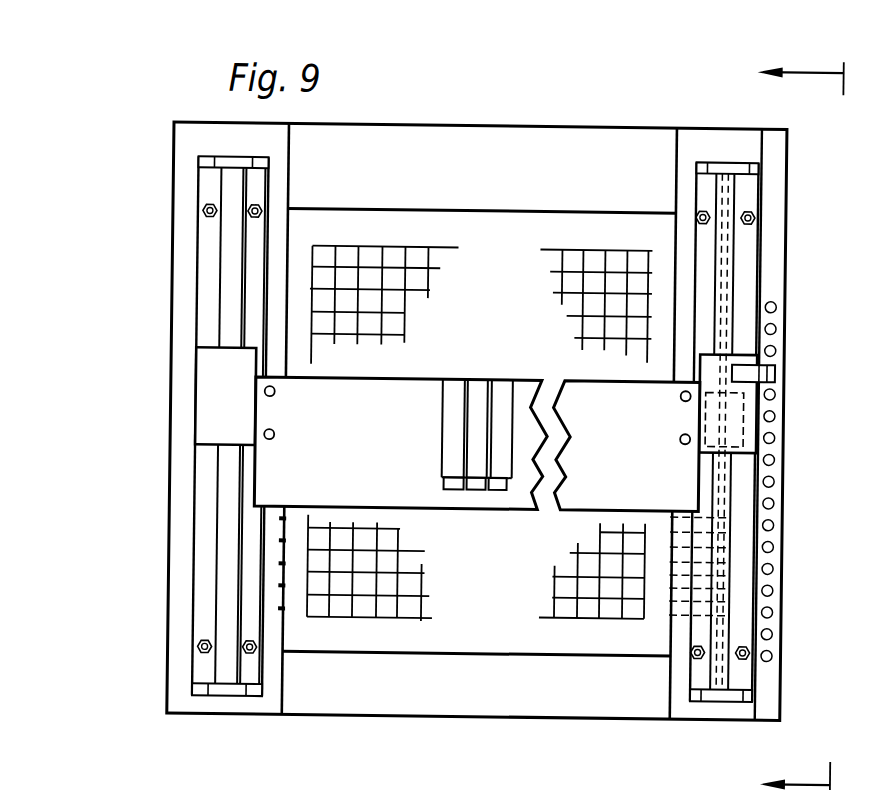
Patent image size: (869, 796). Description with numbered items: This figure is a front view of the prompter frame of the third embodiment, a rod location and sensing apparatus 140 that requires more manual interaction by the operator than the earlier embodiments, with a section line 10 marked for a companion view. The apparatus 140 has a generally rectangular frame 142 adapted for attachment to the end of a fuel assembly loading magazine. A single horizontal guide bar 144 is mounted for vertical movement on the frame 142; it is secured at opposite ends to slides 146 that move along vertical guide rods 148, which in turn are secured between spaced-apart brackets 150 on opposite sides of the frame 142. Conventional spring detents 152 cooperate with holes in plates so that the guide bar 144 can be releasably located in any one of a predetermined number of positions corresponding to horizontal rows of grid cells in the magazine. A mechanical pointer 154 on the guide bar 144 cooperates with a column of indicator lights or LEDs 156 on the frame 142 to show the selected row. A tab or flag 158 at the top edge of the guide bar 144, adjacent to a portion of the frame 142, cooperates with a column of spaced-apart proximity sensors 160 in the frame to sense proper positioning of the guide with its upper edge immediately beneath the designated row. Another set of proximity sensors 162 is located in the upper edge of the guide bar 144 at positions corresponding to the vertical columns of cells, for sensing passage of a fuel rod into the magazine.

The section line 10- 10 is at (782, 413).
The rod location and sensing apparatus 140 is at (610, 111).
The frame 142 is at (535, 131).
The guide bar 144 is at (377, 441).
The slides 146 is at (226, 418).
The guide rods 148 is at (233, 271).
The brackets 150 is at (233, 159).
The spring detents 152 is at (775, 365).
The mechanical pointer 154 is at (764, 411).
The indicator lights 156 is at (778, 497).
The tab or flag 158 is at (674, 362).
The proximity sensors 160 is at (674, 552).
The proximity sensors 162 is at (505, 383).